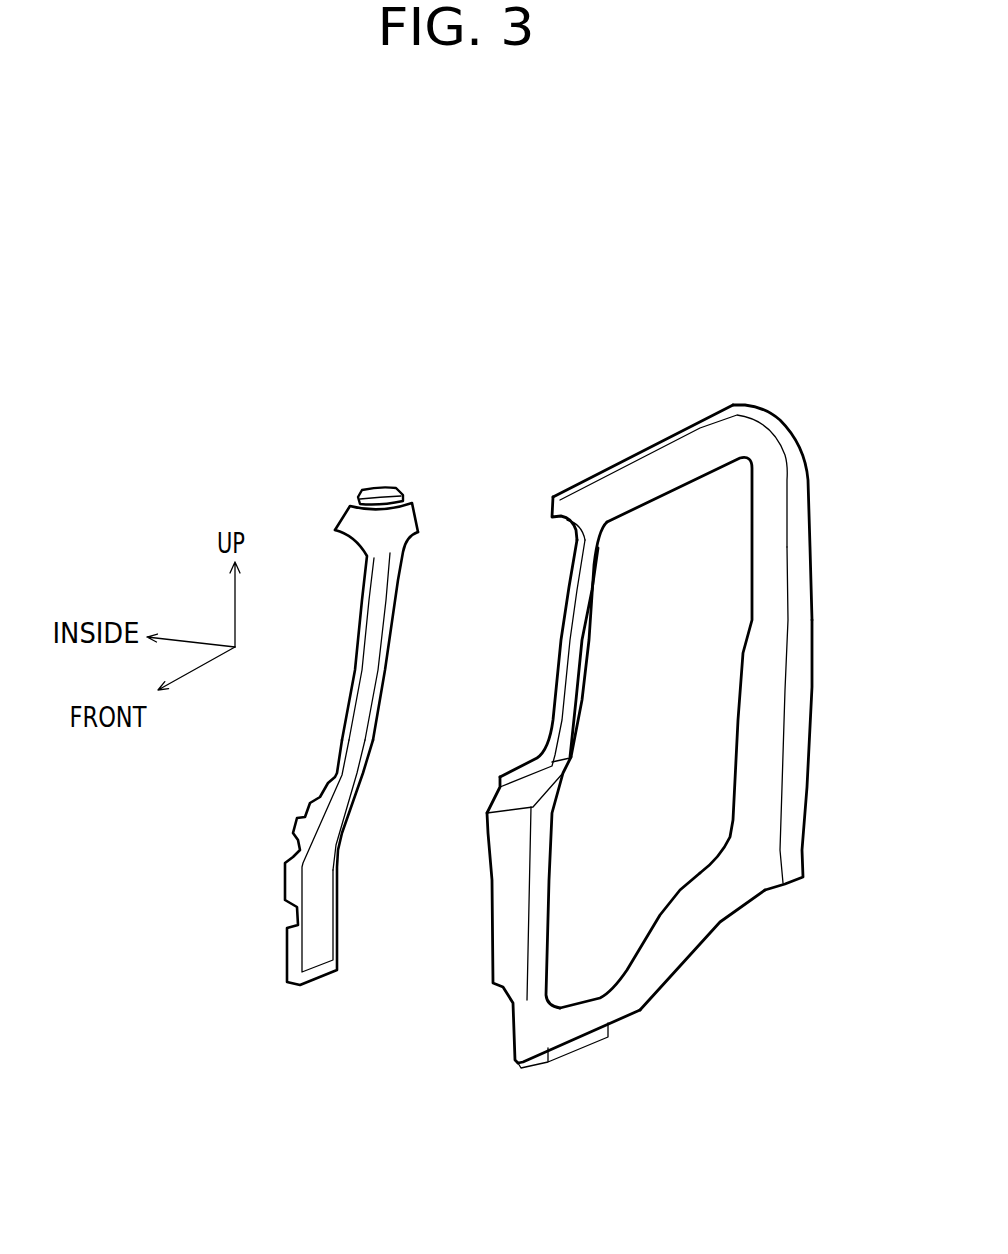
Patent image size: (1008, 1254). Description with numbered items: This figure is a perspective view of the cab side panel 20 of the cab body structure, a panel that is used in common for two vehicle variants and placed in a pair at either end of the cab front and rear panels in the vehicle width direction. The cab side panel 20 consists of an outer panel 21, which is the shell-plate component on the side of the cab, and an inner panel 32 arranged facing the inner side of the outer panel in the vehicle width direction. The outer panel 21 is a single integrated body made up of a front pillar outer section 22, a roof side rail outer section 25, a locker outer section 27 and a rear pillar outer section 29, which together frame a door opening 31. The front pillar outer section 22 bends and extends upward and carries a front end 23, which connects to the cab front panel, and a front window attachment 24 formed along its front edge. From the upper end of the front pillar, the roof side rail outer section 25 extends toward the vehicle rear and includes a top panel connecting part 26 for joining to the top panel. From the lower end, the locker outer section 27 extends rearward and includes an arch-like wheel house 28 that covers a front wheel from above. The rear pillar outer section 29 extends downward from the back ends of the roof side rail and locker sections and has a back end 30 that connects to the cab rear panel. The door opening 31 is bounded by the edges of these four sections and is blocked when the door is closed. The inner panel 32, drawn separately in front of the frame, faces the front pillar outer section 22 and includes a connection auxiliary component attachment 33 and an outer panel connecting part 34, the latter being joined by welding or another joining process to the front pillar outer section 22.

The cab side panel 20 is at (650, 703).
The outer panel 21 is at (703, 412).
The front pillar outer section 22 is at (590, 572).
The front end 23 is at (503, 838).
The front window attachment 24 is at (535, 769).
The roof side rail outer section 25 is at (638, 467).
The top panel connecting part 26 is at (610, 465).
The locker outer section 27 is at (630, 1000).
The wheel house 28 is at (681, 914).
The rear pillar outer section 29 is at (800, 591).
The back end 30 is at (813, 691).
The door opening 31 is at (727, 862).
The inner panel 32 is at (380, 477).
The connection auxiliary component attachment 33 is at (320, 680).
The outer panel connecting part 34 is at (388, 550).